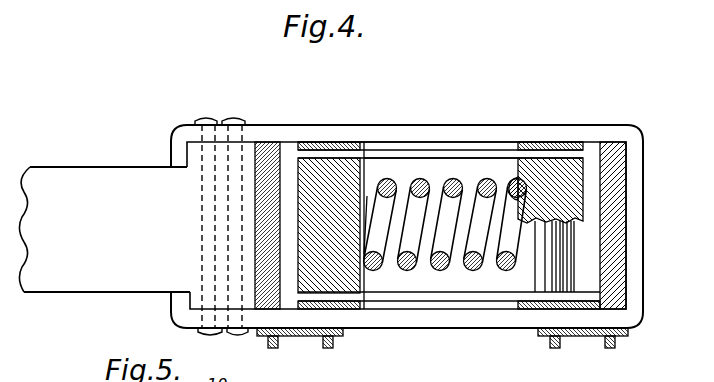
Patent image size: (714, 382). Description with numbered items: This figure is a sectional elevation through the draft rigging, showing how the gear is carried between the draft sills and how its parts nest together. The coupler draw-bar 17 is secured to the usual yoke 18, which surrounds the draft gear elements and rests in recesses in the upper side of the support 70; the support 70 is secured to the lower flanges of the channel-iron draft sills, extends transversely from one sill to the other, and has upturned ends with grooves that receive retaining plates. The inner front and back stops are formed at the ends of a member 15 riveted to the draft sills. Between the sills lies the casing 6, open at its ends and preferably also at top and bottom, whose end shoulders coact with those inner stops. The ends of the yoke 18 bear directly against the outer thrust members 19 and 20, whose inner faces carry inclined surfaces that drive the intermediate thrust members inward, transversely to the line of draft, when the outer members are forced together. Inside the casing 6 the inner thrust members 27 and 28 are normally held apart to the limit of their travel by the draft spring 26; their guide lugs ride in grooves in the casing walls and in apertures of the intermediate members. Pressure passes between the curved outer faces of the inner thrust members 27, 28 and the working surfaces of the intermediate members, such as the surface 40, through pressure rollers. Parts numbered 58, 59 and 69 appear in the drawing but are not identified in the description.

The casing 6 is at (492, 145).
The member 15 is at (388, 152).
The coupler draw-bar 17 is at (104, 229).
The yoke 18 is at (442, 135).
The outer thrust member 19 is at (255, 230).
The outer thrust member 20 is at (615, 217).
The draft spring 26 is at (445, 224).
The inner thrust member 27 is at (329, 225).
The inner thrust member 28 is at (550, 190).
The surface of intermediate thrust member 40 is at (543, 277).
The base strip 58 is at (585, 337).
The base strip 59 is at (302, 338).
The foot 69 is at (617, 340).
The support 70 is at (552, 344).